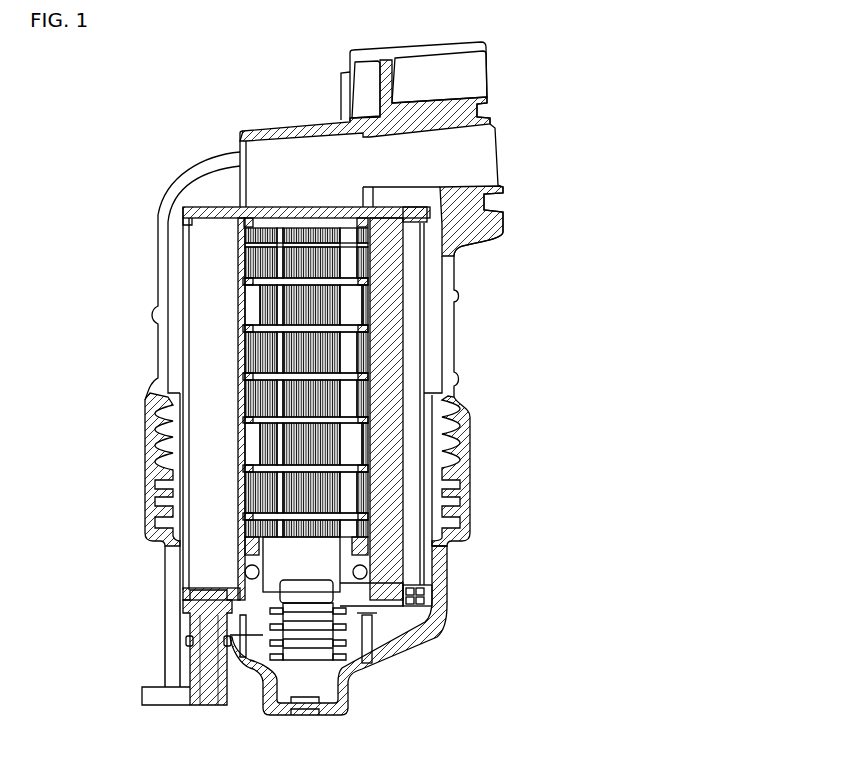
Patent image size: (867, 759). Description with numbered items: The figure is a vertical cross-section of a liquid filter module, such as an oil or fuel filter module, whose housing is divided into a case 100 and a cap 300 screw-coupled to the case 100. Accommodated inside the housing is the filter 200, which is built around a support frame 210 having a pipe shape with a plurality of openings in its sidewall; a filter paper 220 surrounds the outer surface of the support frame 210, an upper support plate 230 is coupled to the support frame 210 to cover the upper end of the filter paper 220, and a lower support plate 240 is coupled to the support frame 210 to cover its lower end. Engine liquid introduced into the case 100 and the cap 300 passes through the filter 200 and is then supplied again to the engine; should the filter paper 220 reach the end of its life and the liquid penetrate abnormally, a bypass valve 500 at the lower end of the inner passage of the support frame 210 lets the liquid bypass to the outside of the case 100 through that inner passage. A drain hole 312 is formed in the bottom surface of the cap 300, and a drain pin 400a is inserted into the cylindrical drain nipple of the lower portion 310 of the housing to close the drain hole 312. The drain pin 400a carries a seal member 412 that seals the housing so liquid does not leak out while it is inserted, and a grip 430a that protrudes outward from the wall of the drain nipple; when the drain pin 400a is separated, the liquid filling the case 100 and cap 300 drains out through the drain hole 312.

The case 100 is at (448, 333).
The filter 200 is at (80, 210).
The support frame 210 is at (246, 458).
The filter paper 220 is at (216, 333).
The upper support plate 230 is at (238, 208).
The lower support plate 240 is at (250, 578).
The cap 300 is at (315, 563).
The boss 310 is at (178, 658).
The drain hole 312 is at (212, 706).
The drain pin 400a is at (210, 670).
The seal member 412 is at (186, 641).
The grip 430a is at (142, 689).
The bypass valve 500 is at (356, 597).